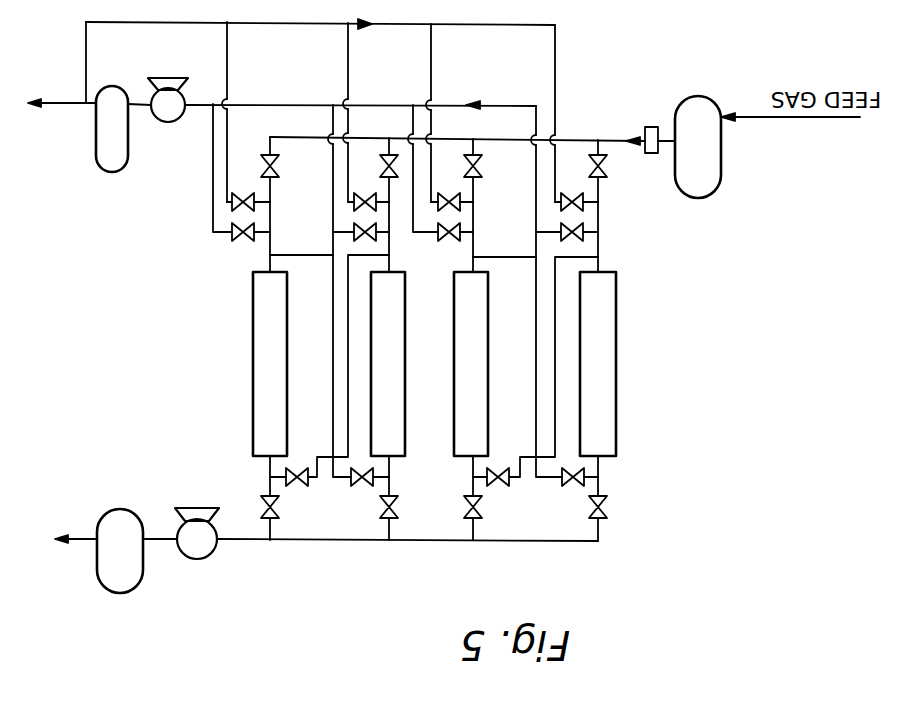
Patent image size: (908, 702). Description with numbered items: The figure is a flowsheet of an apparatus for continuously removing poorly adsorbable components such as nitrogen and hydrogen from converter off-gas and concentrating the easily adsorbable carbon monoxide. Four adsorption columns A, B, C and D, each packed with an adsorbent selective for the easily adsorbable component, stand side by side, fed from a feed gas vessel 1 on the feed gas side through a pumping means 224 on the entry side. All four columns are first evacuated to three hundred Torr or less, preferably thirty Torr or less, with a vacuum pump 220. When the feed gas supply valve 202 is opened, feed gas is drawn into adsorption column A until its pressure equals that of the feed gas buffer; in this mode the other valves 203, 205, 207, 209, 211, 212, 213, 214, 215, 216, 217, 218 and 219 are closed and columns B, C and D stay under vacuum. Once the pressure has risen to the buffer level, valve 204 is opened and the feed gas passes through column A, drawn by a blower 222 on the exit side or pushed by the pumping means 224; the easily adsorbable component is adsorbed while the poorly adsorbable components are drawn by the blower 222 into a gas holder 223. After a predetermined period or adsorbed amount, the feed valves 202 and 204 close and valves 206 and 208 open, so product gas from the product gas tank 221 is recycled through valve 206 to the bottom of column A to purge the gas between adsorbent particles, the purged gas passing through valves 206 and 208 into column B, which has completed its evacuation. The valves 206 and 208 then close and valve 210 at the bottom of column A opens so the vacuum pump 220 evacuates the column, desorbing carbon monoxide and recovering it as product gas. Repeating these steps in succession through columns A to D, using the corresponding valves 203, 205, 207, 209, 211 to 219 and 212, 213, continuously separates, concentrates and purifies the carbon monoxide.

The feed gas surge vessel 1 is at (705, 197).
The feed gas supply valve 202 is at (607, 168).
The valve 203 is at (479, 168).
The feed valve 204 is at (608, 507).
The valve 205 is at (464, 506).
The valve 206 is at (566, 200).
The valve 207 is at (453, 195).
The valve 208 is at (572, 488).
The valve 209 is at (504, 486).
The valve 210 is at (387, 160).
The valve 211 is at (281, 166).
The valve 212 is at (380, 508).
The valve 213 is at (261, 504).
The valve 214 is at (365, 200).
The valve 215 is at (245, 200).
The valve 216 is at (364, 484).
The valve 217 is at (300, 468).
The valve 218 is at (352, 236).
The valve 219 is at (238, 238).
The vacuum pump 220 is at (169, 78).
The product gas tank 221 is at (112, 86).
The blower 222 is at (186, 508).
The gas holder 223 is at (108, 509).
The pumping means 224 is at (651, 127).
The adsorption column A is at (616, 356).
The adsorption column B is at (454, 356).
The adsorption column C is at (371, 355).
The adsorption column D is at (253, 357).